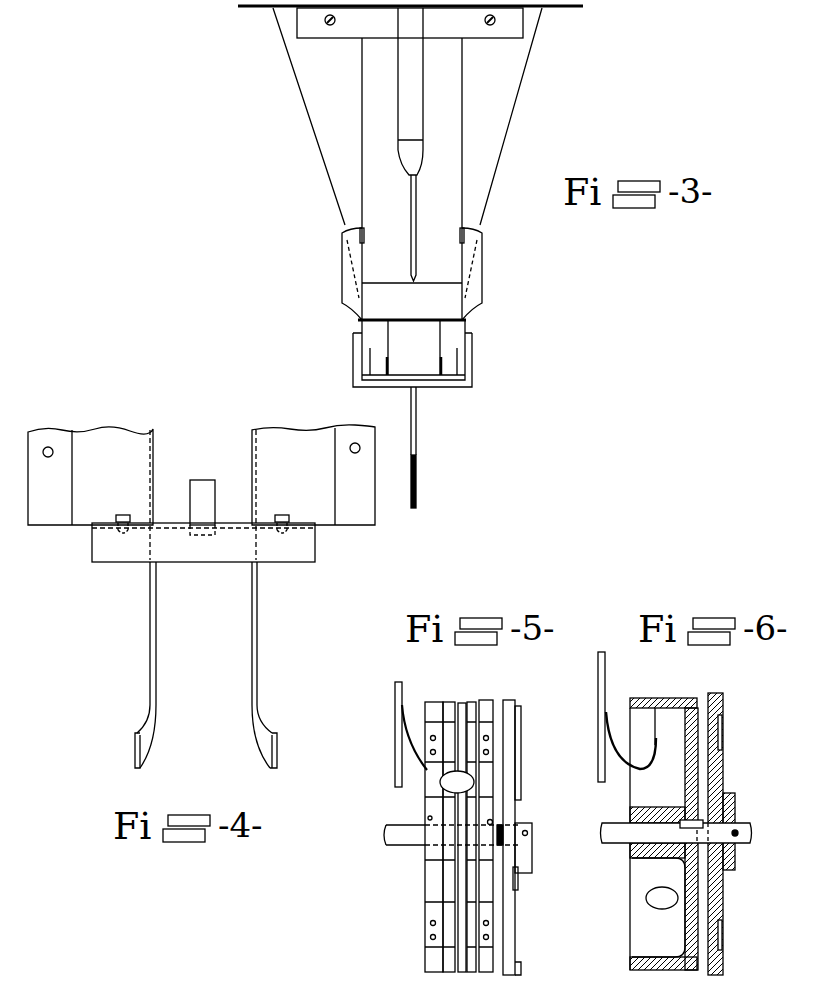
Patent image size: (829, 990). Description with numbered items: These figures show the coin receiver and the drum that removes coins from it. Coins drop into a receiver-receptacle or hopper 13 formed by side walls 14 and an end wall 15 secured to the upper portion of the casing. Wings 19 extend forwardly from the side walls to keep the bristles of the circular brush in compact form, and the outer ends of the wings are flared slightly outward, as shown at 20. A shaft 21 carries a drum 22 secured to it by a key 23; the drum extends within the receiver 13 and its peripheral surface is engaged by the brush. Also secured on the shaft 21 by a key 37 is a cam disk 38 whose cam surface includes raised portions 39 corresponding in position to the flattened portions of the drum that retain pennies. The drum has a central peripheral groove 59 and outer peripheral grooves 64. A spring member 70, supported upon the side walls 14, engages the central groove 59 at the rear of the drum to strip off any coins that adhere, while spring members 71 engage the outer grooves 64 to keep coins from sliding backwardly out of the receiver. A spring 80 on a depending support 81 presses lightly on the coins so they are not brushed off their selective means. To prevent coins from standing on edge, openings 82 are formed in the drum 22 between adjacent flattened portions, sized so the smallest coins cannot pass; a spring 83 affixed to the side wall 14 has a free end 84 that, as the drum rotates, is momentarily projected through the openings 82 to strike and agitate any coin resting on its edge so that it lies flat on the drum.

In FIG. 3, the receiver-receptacle or hopper 13 is at (425, 179).
In FIG. 4, the receiver-receptacle or hopper 13 is at (124, 430).
In FIG. 3, the side walls 14 is at (500, 156).
In FIG. 4, the side walls 14 is at (313, 492).
In FIG. 5, the side walls 14 is at (395, 690).
In FIG. 6, the side walls 14 is at (598, 666).
In FIG. 3, the end wall 15 is at (412, 247).
In FIG. 3, the wings 19 is at (364, 238).
In FIG. 4, the wings 19 is at (257, 651).
In FIG. 3, the flared outer ends of wings 20 is at (476, 288).
In FIG. 4, the flared outer ends of wings 20 is at (278, 749).
In FIG. 5, the shaft 21 is at (410, 828).
In FIG. 6, the shaft 21 is at (615, 831).
In FIG. 5, the drum 22 is at (426, 776).
In FIG. 6, the drum 22 is at (685, 736).
In FIG. 5, the key 23 is at (492, 823).
In FIG. 6, the key 23 is at (690, 820).
In FIG. 5, the key 37 is at (532, 838).
In FIG. 6, the key 37 is at (736, 839).
In FIG. 5, the cam disk 38 is at (516, 713).
In FIG. 6, the cam disk 38 is at (724, 761).
In FIG. 5, the raised portions 39 is at (521, 763).
In FIG. 5, the peripheral groove 59 is at (462, 703).
In FIG. 6, the peripheral groove 59 is at (662, 698).
In FIG. 5, the outer peripheral grooves 64 is at (446, 702).
In FIG. 3, the spring member 70 is at (416, 469).
In FIG. 3, the spring members 71 is at (437, 349).
In FIG. 3, the spring 80 is at (411, 239).
In FIG. 3, the depending support 81 is at (403, 95).
In FIG. 5, the openings 82 is at (441, 783).
In FIG. 6, the openings 82 is at (662, 910).
In FIG. 5, the spring 83 is at (408, 736).
In FIG. 6, the spring 83 is at (627, 766).
In FIG. 6, the free end 84 is at (656, 719).